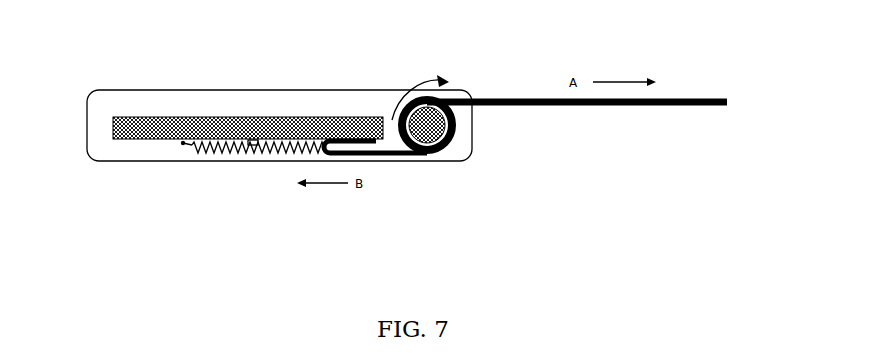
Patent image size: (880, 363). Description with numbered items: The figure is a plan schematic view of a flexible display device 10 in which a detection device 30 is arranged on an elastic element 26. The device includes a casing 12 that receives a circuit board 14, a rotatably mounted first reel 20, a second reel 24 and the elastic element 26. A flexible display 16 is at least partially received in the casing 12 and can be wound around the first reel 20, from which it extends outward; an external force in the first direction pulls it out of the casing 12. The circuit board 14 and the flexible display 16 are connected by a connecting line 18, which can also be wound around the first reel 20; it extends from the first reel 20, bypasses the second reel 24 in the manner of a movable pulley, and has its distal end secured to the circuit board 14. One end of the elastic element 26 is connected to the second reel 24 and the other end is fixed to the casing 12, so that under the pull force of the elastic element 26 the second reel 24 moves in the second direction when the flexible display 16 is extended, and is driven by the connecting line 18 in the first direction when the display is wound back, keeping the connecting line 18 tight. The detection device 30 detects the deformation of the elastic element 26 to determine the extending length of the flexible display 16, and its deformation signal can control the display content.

The flexible display device 10 is at (312, 236).
The casing 12 is at (118, 163).
The circuit board 14 is at (260, 118).
The flexible display 16 is at (705, 97).
The connecting line 18 is at (408, 162).
The first reel 20 is at (460, 128).
The second reel 24 is at (357, 157).
The elastic element 26 is at (242, 156).
The detection device 30 is at (254, 145).